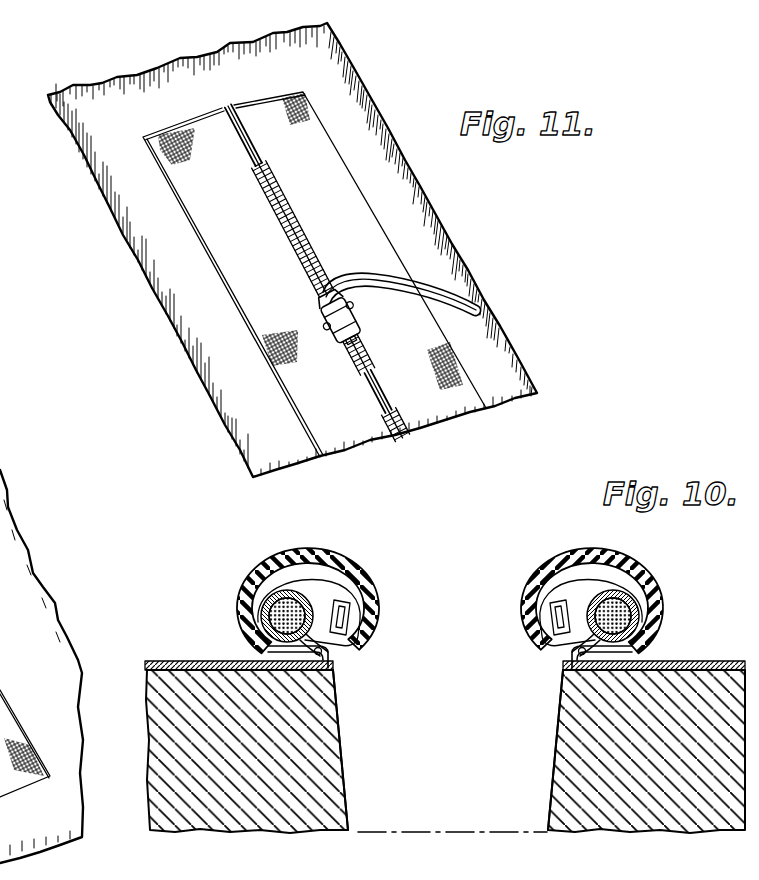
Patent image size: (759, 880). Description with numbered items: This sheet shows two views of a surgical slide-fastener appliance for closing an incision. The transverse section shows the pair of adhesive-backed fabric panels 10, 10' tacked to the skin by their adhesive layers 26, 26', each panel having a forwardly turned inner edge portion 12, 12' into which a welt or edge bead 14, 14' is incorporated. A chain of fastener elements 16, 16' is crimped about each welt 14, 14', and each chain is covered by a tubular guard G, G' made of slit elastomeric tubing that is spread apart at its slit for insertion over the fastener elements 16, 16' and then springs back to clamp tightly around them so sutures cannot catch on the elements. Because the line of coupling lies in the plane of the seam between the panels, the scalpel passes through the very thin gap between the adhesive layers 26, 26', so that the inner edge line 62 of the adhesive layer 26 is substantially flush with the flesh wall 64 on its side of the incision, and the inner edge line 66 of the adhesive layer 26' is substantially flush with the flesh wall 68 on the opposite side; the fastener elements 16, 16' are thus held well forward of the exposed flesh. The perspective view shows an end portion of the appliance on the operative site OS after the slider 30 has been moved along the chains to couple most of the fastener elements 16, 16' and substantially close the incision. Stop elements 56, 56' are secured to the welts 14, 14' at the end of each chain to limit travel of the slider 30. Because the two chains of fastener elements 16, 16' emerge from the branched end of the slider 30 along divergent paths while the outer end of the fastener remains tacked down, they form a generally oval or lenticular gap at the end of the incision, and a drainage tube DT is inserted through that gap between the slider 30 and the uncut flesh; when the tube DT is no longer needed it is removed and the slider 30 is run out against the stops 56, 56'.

In FIG. 11, the operative site OS is at (113, 137).
In FIG. 11, the fabric panel 10 is at (233, 282).
In FIG. 10, the fabric panel 10 is at (247, 730).
In FIG. 11, the fabric panel 10' is at (360, 250).
In FIG. 10, the fabric panel 10' is at (647, 729).
In FIG. 11, the welt 14 is at (283, 272).
In FIG. 10, the welt 14 is at (250, 599).
In FIG. 11, the welt 14' is at (333, 245).
In FIG. 10, the welt 14' is at (660, 609).
In FIG. 11, the stop element 56 is at (297, 307).
In FIG. 11, the stop element 56' is at (355, 284).
In FIG. 11, the fastener element 16 is at (309, 312).
In FIG. 10, the fastener element 16 is at (327, 590).
In FIG. 11, the fastener element 16' is at (343, 260).
In FIG. 10, the fastener element 16' is at (623, 588).
In FIG. 11, the slider 30 is at (362, 321).
In FIG. 11, the drainage tube DT is at (440, 288).
In FIG. 10, the tubular guard G is at (308, 582).
In FIG. 10, the tubular guard G' is at (592, 583).
In FIG. 10, the inner edge portion 12 is at (339, 605).
In FIG. 10, the inner edge portion 12' is at (568, 598).
In FIG. 10, the adhesive layer 26 is at (239, 649).
In FIG. 10, the adhesive layer 26' is at (654, 649).
In FIG. 10, the inner edge line 62 is at (333, 667).
In FIG. 10, the flesh wall 64 is at (336, 702).
In FIG. 10, the inner edge line 66 is at (570, 670).
In FIG. 10, the flesh wall 68 is at (560, 722).